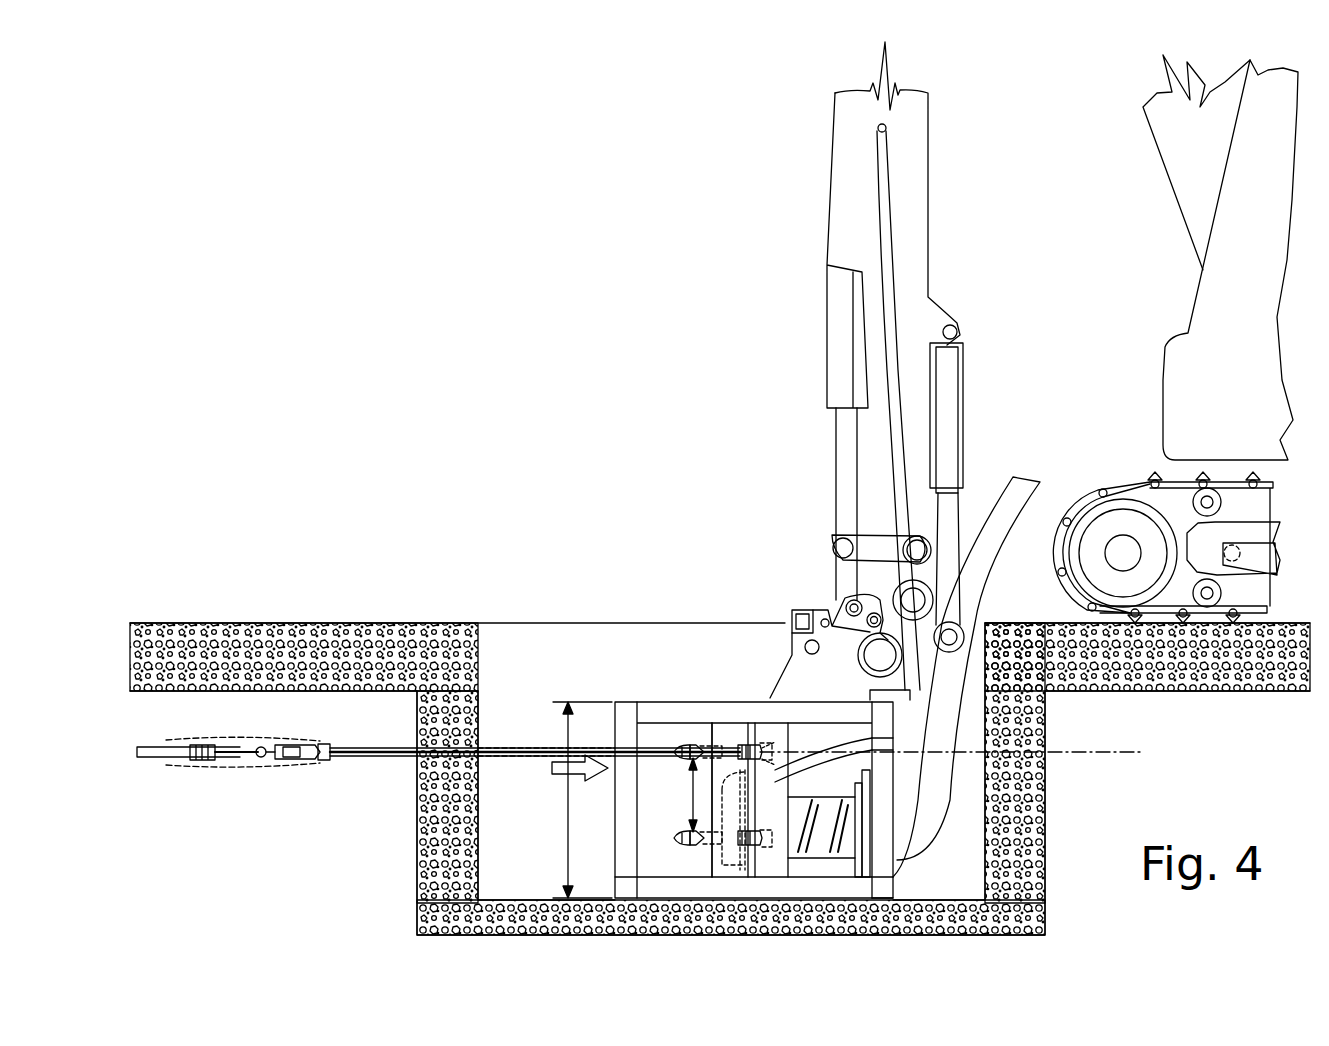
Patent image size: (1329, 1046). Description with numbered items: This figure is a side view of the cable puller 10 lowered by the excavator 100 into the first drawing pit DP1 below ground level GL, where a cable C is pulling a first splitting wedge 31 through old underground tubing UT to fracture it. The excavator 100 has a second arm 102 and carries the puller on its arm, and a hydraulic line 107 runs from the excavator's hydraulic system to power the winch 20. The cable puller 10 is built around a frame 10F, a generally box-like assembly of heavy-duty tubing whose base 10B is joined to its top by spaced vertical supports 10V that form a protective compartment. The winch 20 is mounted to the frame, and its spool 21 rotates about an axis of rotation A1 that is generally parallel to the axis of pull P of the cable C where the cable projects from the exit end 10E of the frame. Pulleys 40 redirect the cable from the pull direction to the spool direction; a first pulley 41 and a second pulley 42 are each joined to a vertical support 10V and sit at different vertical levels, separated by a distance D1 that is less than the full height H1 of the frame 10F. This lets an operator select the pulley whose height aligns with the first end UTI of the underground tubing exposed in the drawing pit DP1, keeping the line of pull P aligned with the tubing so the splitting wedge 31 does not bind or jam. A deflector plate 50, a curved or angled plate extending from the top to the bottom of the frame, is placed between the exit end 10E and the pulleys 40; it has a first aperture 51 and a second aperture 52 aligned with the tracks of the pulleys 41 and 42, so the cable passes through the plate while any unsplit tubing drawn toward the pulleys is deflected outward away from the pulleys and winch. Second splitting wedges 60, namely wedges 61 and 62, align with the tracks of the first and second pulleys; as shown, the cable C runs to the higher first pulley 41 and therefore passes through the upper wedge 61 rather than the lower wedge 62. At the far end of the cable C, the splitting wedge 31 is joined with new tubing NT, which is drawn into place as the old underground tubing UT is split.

The cable puller 10 is at (628, 700).
The vertical supports 10V is at (725, 740).
The exit end 10E is at (622, 898).
The frame 10F is at (894, 888).
The base 10B is at (882, 895).
The winch 20 is at (870, 812).
The spool 21 is at (862, 793).
The first splitting wedge 31 is at (322, 759).
The pulleys 40 is at (795, 818).
The first pulley 41 is at (762, 748).
The second pulley 42 is at (752, 850).
The deflector plate 50 is at (672, 756).
The first aperture 51 is at (675, 751).
The second aperture 52 is at (680, 845).
The second splitting wedges 60 is at (672, 762).
The second splitting wedge 61 is at (690, 744).
The second splitting wedge 62 is at (690, 848).
The excavator 100 is at (1200, 292).
The second arm 102 is at (1178, 152).
The hydraulic line 107 is at (898, 430).
The new tubing NT is at (152, 758).
The underground tubing UT is at (375, 746).
The first end of underground tubing UTI is at (482, 745).
The cable C is at (387, 757).
The ground level GL is at (368, 622).
The axis of pull P is at (571, 768).
The full height of frame H1 is at (582, 800).
The distance between pulleys D1 is at (681, 795).
The axis of rotation A1 is at (1085, 752).
The first drawing pit DP1 is at (968, 724).